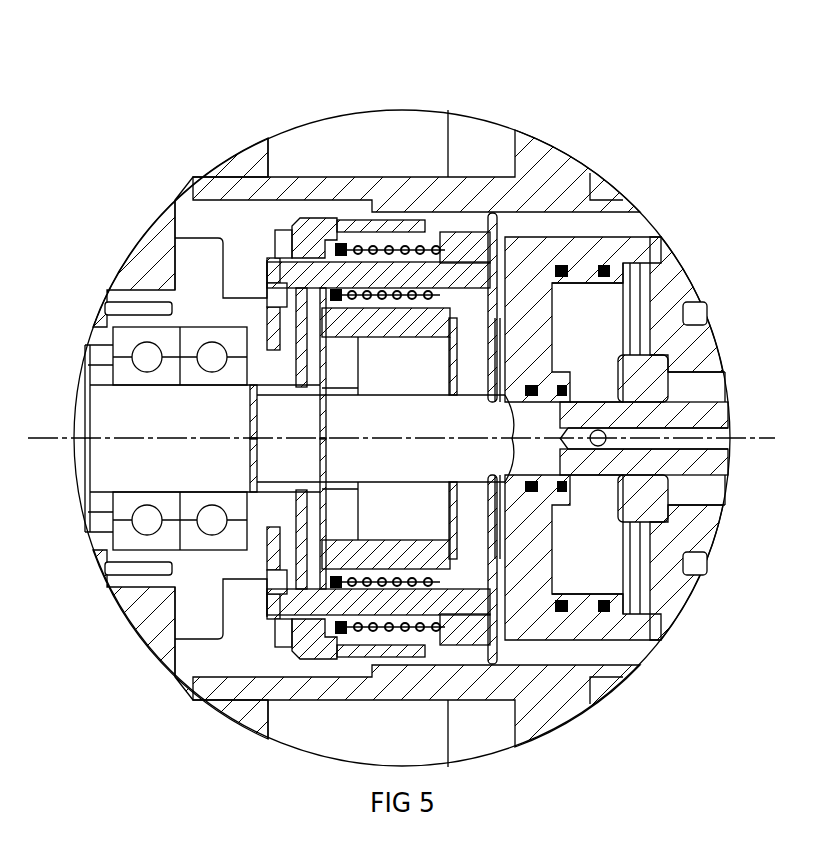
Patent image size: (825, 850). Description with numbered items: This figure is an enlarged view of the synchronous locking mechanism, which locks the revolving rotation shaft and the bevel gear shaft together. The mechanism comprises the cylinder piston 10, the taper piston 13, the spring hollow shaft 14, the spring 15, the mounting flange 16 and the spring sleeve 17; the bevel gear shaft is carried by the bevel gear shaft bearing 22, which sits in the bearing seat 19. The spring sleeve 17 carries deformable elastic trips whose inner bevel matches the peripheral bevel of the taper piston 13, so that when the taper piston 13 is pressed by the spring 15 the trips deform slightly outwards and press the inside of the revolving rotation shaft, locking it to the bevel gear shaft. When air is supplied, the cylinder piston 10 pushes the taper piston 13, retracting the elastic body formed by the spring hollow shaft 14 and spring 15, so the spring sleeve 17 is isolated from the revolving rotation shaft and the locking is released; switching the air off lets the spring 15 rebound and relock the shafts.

The cylinder piston 10 is at (590, 195).
The taper piston 13 is at (508, 213).
The spring hollow shaft 14 is at (437, 217).
The spring 15 is at (368, 240).
The mounting flange 16 is at (323, 285).
The spring sleeve 17 is at (307, 230).
The bearing seat 19 is at (207, 257).
The bevel gear shaft bearing 22 is at (147, 357).